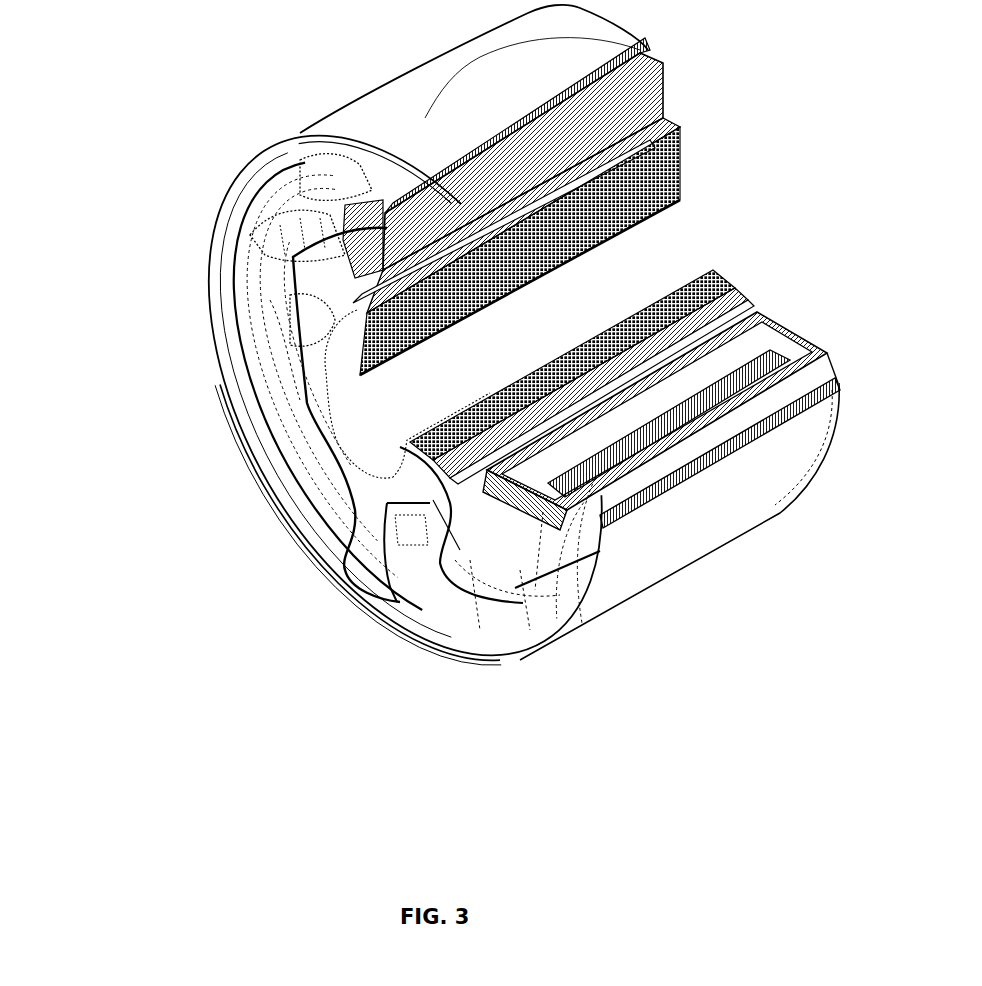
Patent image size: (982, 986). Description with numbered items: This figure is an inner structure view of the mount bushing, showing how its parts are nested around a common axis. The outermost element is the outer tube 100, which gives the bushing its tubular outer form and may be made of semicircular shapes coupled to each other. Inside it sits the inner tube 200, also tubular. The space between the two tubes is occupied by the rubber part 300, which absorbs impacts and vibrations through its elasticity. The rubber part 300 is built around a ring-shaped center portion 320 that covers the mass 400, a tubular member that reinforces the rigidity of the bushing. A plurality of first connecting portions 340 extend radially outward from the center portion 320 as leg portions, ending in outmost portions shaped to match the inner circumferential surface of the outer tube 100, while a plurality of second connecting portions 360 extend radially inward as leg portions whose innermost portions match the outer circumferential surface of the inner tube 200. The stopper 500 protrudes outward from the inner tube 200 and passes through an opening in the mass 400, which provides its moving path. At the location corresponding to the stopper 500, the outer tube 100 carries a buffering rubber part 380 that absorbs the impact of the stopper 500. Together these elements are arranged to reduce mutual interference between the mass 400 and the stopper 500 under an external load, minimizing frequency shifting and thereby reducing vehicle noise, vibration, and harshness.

The outer tube 100 is at (416, 76).
The inner tube 200 is at (248, 452).
The rubber part 300 is at (100, 215).
The center portion 320 is at (295, 222).
The first connecting portions 340 is at (320, 180).
The second connecting portions 360 is at (305, 318).
The buffering rubber part 380 is at (418, 640).
The mass 400 is at (660, 90).
The stopper 500 is at (345, 592).